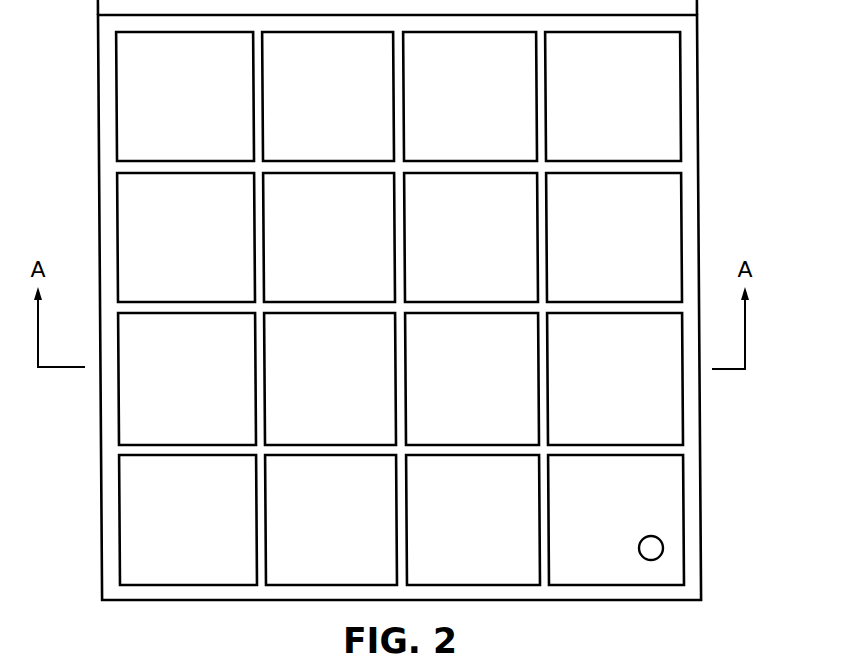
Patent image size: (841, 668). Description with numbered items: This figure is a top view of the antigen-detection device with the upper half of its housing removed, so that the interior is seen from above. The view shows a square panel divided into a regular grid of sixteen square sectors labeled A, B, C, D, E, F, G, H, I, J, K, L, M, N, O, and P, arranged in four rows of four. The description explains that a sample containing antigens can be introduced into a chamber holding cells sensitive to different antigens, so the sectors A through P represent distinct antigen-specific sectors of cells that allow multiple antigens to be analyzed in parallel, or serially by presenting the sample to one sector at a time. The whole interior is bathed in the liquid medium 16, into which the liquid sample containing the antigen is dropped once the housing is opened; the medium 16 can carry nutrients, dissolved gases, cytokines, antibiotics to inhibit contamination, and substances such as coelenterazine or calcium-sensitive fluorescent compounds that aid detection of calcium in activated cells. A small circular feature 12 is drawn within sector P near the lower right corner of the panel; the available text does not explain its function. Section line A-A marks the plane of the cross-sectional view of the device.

The liquid medium 16 is at (426, 300).
The aperture 12 is at (663, 546).
The cell A is at (185, 96).
The cell B is at (328, 96).
The cell C is at (470, 96).
The cell D is at (613, 96).
The cell E is at (186, 237).
The cell F is at (329, 237).
The cell G is at (471, 237).
The cell H is at (614, 237).
The cell I is at (187, 379).
The cell J is at (330, 379).
The cell K is at (472, 379).
The cell L is at (615, 379).
The cell M is at (188, 520).
The cell N is at (331, 520).
The cell O is at (473, 520).
The cell P is at (616, 520).